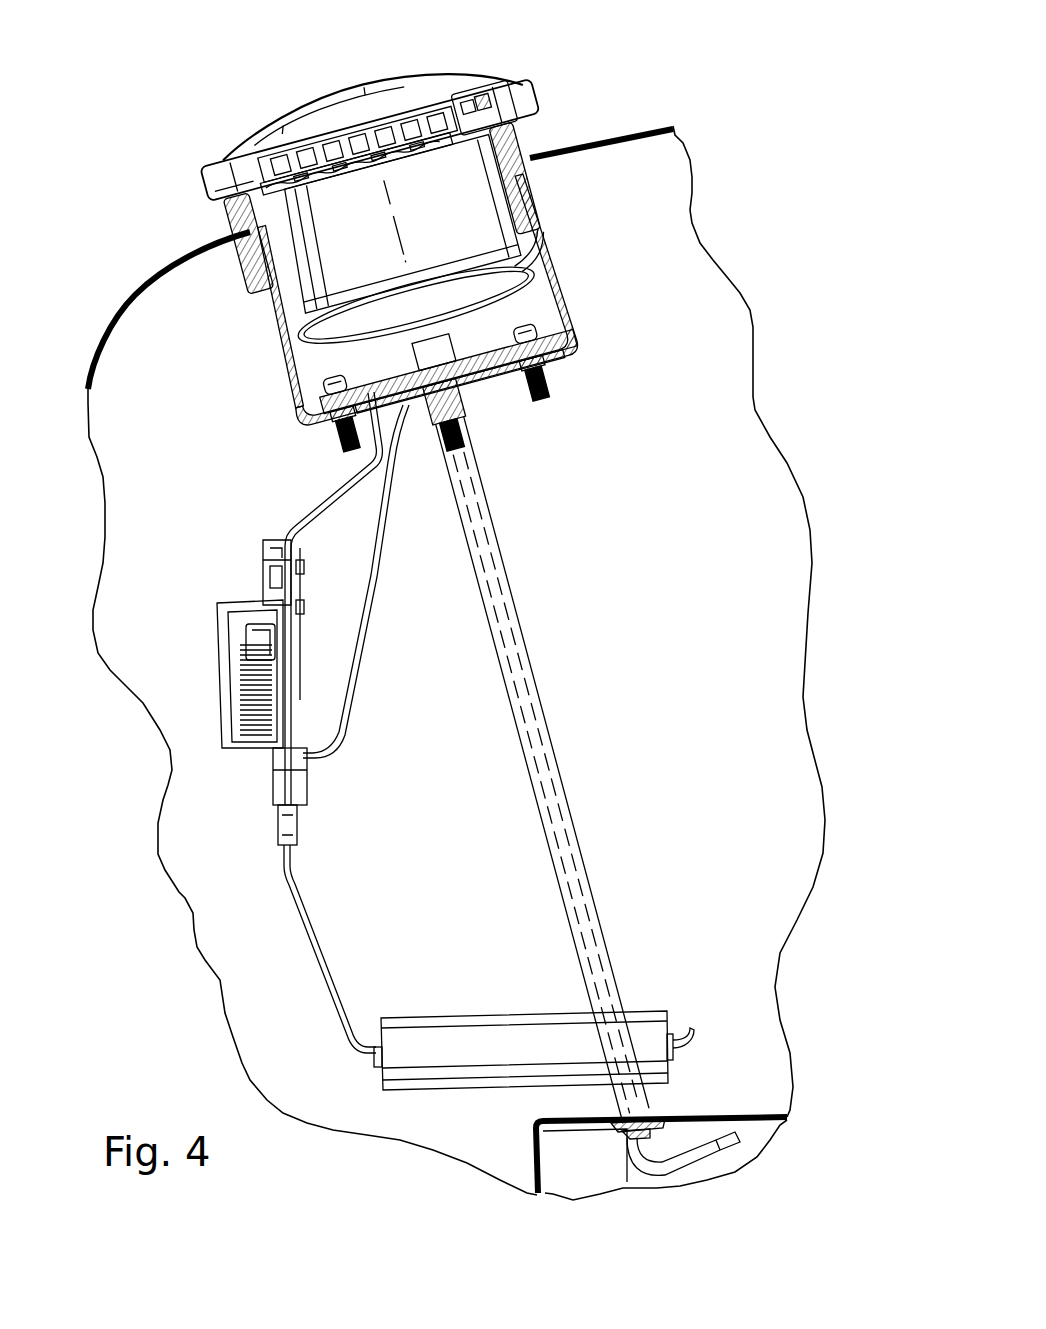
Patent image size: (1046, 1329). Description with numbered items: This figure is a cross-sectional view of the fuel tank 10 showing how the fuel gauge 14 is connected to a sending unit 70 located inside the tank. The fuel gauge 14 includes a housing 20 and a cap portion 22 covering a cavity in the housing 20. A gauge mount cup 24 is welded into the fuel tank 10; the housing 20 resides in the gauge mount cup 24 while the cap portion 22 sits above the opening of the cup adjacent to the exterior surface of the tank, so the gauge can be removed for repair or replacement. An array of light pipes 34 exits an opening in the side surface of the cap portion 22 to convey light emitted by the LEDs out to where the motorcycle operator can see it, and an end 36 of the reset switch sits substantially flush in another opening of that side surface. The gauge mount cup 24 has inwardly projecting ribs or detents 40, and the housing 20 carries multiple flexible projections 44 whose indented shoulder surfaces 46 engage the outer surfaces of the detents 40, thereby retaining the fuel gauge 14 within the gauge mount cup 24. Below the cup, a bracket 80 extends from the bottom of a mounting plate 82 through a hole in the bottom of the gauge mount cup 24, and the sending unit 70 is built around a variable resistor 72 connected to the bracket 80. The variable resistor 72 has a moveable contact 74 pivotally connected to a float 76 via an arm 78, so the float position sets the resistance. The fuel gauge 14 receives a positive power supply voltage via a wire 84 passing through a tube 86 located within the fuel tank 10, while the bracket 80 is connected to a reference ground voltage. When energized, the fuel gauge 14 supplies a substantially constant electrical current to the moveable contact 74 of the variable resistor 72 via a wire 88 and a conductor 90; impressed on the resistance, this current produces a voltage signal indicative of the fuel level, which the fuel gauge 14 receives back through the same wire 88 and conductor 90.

The fuel tank 10 is at (665, 120).
The fuel gauge 14 is at (308, 66).
The housing 20 is at (404, 231).
The cap portion 22 is at (258, 125).
The gauge mount cup 24 is at (565, 300).
The array of light pipes 34 is at (212, 172).
The end of reset switch 36 is at (527, 88).
The inwardly projecting ribs or detents 40 is at (538, 184).
The flexible projections 44 is at (272, 306).
The indented shoulder surfaces 46 is at (250, 275).
The sending unit 70 is at (232, 498).
The variable resistor 72 is at (216, 615).
The moveable contact 74 is at (268, 633).
The float 76 is at (490, 1013).
The arm 78 is at (305, 928).
The bracket 80 is at (318, 507).
The mounting plate 82 is at (560, 348).
The wire 84 is at (552, 262).
The tube 86 is at (548, 712).
The wire 88 is at (282, 368).
The conductor 90 is at (373, 590).